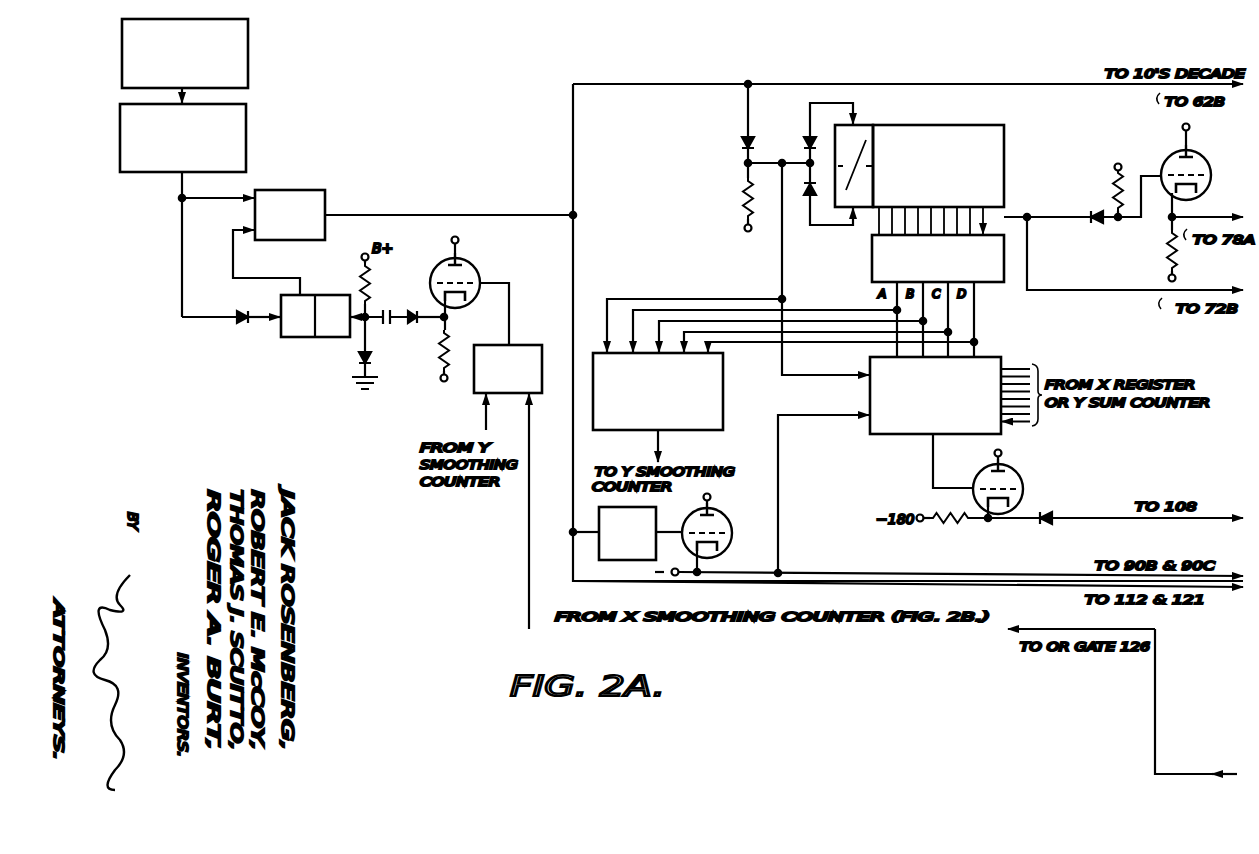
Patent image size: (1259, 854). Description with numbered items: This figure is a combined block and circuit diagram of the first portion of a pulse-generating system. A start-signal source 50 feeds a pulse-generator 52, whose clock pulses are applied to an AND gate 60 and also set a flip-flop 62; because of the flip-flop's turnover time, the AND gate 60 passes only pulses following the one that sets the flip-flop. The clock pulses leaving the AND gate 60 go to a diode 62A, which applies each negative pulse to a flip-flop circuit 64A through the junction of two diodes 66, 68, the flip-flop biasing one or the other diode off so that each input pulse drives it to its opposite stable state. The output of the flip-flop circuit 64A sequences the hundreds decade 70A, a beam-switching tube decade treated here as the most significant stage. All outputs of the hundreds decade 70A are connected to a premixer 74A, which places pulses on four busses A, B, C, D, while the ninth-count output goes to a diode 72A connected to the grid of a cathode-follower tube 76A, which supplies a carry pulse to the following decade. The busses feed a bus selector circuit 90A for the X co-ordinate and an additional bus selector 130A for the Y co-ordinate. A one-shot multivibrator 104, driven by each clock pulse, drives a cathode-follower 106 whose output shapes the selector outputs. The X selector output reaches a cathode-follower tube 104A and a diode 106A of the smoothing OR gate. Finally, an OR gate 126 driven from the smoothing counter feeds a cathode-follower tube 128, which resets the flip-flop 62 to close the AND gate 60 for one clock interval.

The start-signal source 50 is at (248, 53).
The pulse-generator 52 is at (246, 137).
The AND gate 60 is at (310, 190).
The flip-flop 62 is at (310, 337).
The diode 62A is at (742, 145).
The diode 66 is at (802, 143).
The diode 68 is at (808, 200).
The flip-flop circuit 64A is at (862, 128).
The hundreds decade 70A is at (940, 128).
The premixer 74A is at (870, 260).
The diode 72A is at (1102, 212).
The cathode-follower tube 76A is at (1200, 153).
The cathode-follower tube 128 is at (475, 270).
The OR gate 126 is at (518, 345).
The bus selector 130A is at (723, 418).
The bus selector circuit 90A is at (884, 440).
The one-shot multivibrator 104 is at (656, 518).
The cathode-follower 106 is at (729, 521).
The cathode-follower tube 104A is at (1018, 472).
The diode 106A is at (1044, 528).